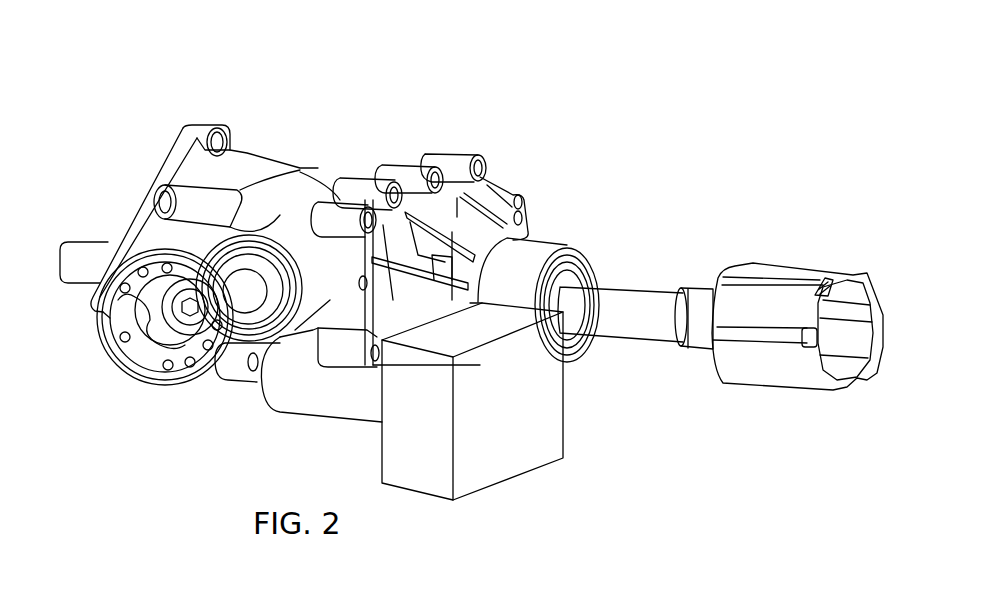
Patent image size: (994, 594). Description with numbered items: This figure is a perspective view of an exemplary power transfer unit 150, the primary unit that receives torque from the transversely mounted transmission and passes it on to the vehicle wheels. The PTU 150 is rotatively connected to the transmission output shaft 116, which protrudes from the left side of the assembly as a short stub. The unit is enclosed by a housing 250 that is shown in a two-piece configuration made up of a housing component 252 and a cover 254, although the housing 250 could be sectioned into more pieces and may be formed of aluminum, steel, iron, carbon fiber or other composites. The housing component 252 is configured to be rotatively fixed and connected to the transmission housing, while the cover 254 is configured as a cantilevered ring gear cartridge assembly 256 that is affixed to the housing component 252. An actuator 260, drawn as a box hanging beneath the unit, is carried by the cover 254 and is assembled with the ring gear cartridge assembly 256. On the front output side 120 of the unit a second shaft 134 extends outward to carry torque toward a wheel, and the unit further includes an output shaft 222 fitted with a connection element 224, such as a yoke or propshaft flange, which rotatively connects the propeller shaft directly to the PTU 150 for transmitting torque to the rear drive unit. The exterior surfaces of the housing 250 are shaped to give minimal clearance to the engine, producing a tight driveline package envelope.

The power transfer unit 150 is at (461, 293).
The housing 250 is at (309, 273).
The housing component 252 is at (238, 153).
The cover 254 is at (458, 192).
The ring gear cartridge assembly 256 is at (572, 237).
The second shaft 134 is at (630, 338).
The actuator 260 is at (460, 507).
The output shaft 222 is at (168, 366).
The connection element 224 is at (112, 340).
The front output side 120 is at (130, 397).
The transmission output shaft 116 is at (78, 240).